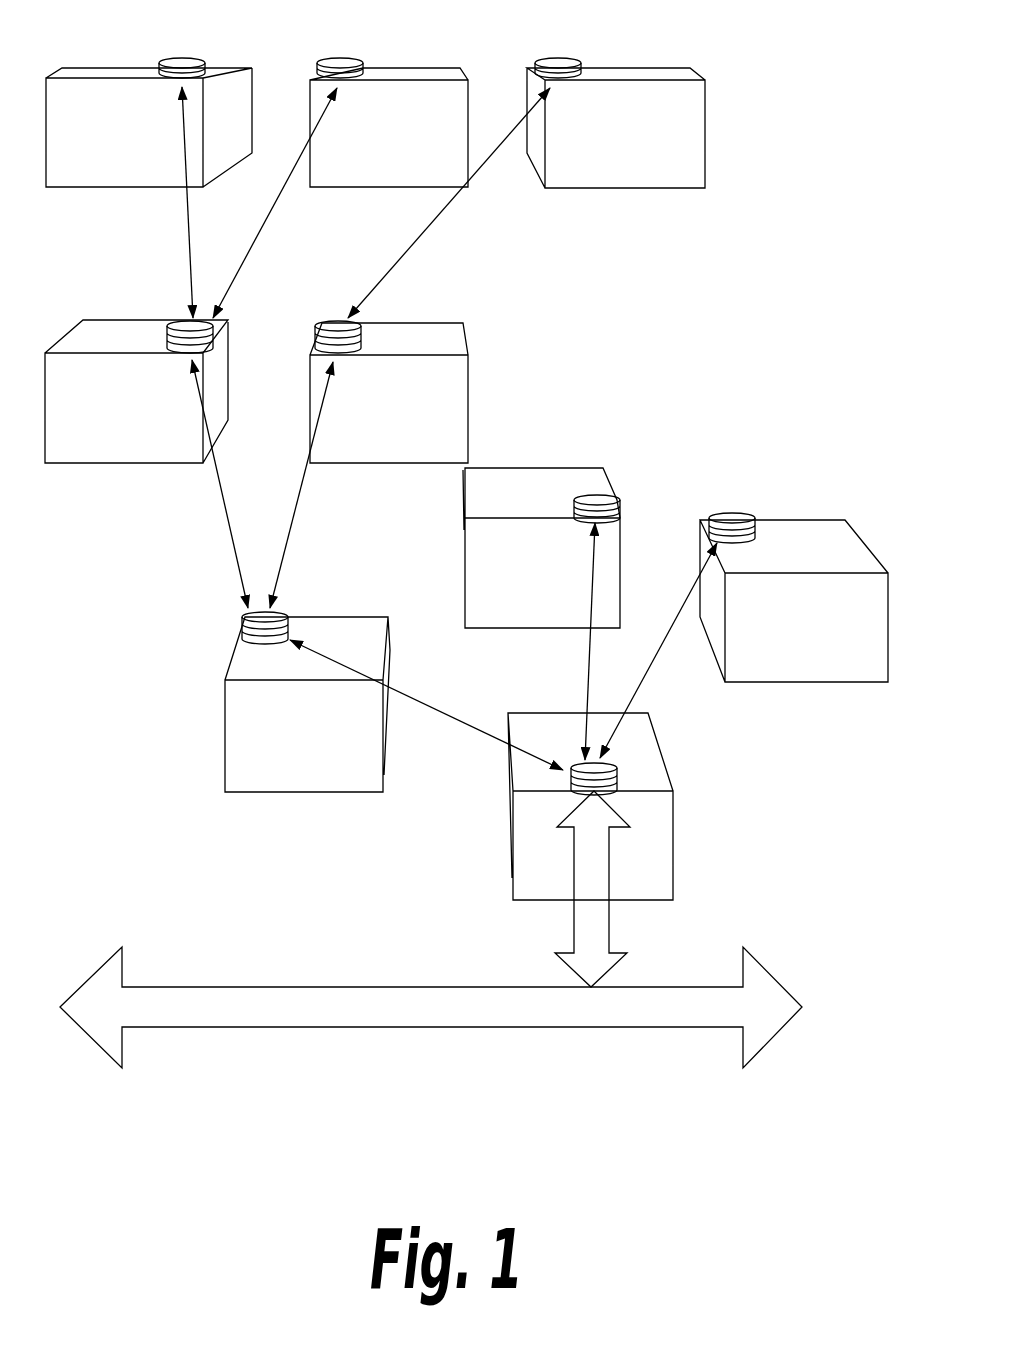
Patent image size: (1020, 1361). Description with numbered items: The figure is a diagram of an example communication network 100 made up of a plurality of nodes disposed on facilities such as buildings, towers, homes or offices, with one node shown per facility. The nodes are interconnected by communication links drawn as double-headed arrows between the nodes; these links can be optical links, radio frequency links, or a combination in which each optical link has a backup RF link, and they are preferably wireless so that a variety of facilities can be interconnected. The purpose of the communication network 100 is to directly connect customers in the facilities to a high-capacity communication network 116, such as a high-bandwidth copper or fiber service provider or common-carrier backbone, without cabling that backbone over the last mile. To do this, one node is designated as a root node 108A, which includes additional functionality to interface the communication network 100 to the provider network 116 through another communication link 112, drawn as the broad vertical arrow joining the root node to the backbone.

The communication network 100 is at (748, 272).
The root node 108A is at (608, 770).
The communication link 112 is at (593, 873).
The high-capacity communication network 116 is at (431, 1007).